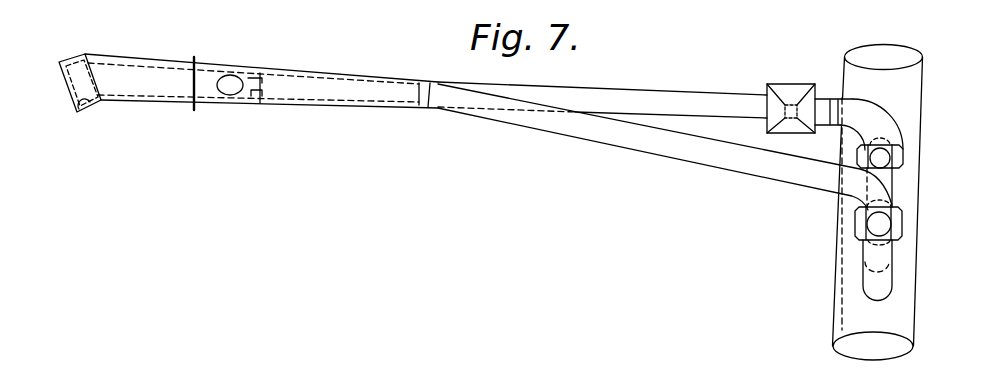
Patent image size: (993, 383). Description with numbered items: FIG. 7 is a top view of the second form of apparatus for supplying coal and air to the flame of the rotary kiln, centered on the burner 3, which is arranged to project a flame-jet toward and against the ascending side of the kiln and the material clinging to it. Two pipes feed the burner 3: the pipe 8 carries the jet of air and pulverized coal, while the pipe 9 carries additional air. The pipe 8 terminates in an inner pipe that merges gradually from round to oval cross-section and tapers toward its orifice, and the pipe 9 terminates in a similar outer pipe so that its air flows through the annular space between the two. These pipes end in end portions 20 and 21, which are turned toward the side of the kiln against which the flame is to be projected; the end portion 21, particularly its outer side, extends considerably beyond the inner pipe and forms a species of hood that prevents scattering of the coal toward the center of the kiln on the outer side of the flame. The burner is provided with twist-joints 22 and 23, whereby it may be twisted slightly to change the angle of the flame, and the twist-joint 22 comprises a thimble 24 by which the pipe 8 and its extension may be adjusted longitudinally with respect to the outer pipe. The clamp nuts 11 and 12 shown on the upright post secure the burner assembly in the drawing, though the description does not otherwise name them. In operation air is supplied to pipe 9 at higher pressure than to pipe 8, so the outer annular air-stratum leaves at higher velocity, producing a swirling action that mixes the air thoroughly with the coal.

The burner 3 is at (122, 82).
The pipe 8 is at (700, 104).
The pipe 9 is at (727, 157).
The upper clamp nut 11 is at (883, 160).
The lower clamp nut 12 is at (897, 223).
The end portion 20 is at (77, 110).
The end portion 21 is at (67, 62).
The twist-joint 22 is at (262, 83).
The twist-joint 23 is at (197, 58).
The thimble 24 is at (252, 93).